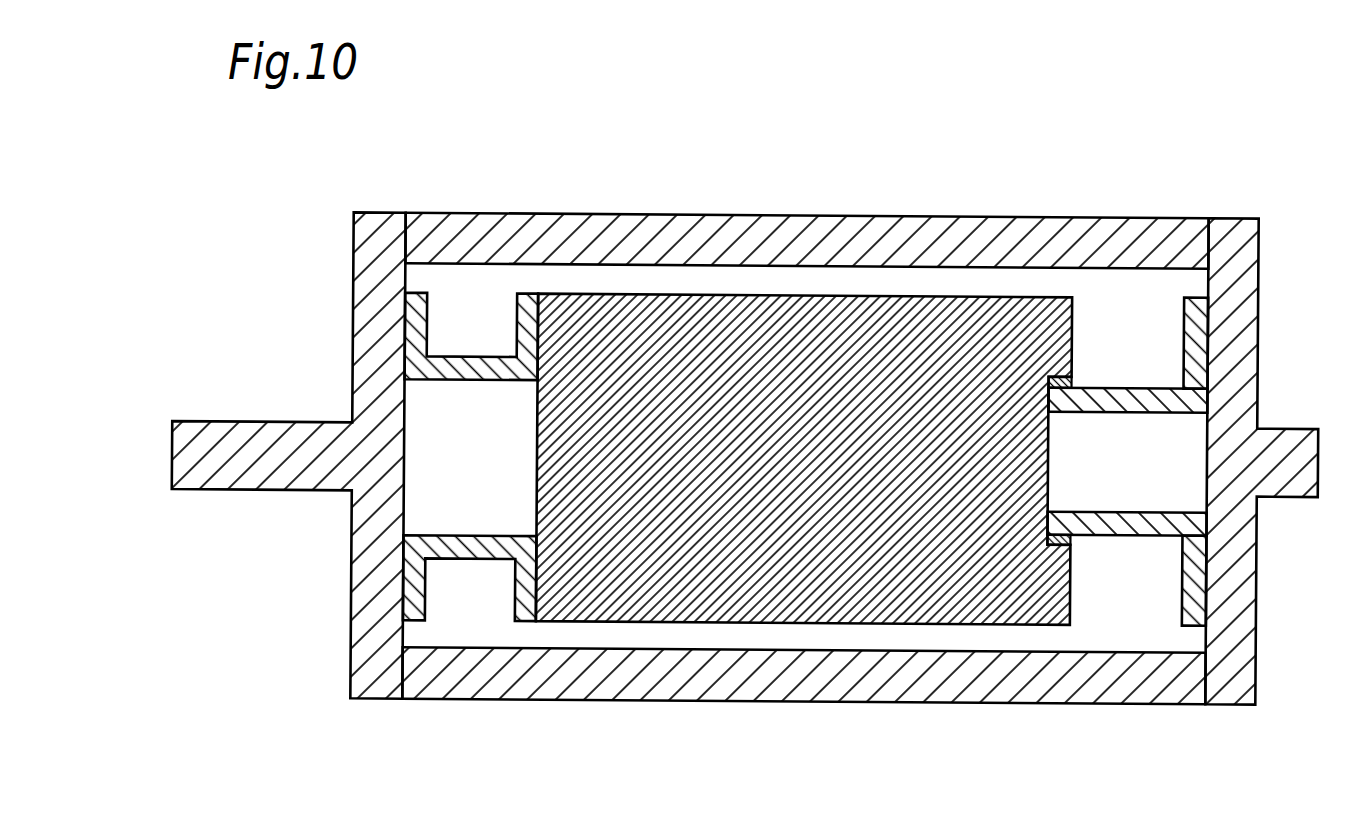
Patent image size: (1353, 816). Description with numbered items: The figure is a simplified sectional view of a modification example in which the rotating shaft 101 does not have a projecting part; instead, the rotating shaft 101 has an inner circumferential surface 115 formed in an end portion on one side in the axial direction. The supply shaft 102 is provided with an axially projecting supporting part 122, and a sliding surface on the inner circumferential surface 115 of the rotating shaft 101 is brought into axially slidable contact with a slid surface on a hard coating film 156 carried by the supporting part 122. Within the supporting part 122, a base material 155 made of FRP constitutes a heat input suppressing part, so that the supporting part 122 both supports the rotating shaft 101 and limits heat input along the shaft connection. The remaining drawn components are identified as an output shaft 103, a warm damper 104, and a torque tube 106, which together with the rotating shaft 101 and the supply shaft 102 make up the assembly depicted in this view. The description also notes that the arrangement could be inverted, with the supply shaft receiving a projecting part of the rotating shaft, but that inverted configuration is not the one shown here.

The rotating shaft 101 is at (742, 330).
The supply shaft 102 is at (1247, 287).
The output shaft 103 is at (372, 321).
The warm damper 104 is at (624, 234).
The torque tube 106 is at (473, 359).
The inner circumferential surface 115 is at (1071, 382).
The axially projecting supporting part 122 is at (1195, 332).
The base material 155 is at (1153, 386).
The hard coating film 156 is at (1049, 388).